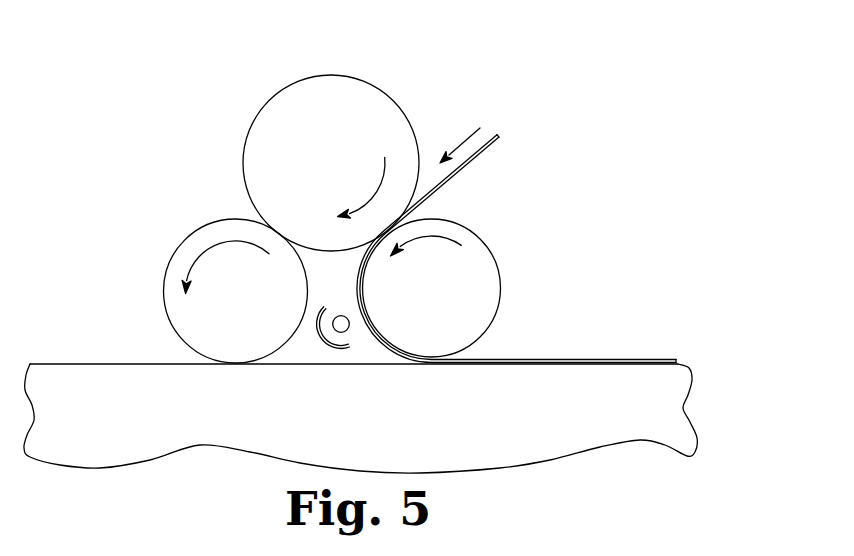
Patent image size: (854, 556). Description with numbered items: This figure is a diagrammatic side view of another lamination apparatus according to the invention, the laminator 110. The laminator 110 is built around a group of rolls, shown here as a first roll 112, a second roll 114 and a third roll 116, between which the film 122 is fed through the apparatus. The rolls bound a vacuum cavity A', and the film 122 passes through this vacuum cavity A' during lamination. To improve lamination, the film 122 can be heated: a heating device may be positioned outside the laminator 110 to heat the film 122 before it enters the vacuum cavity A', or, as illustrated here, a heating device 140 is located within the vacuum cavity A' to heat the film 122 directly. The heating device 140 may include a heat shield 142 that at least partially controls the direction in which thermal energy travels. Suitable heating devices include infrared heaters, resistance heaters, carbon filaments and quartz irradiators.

The laminator 110 is at (448, 67).
The roller 112 is at (493, 256).
The roller 114 is at (323, 75).
The roller 116 is at (167, 272).
The film 122 is at (488, 147).
The heating device 140 is at (347, 331).
The guide 142 is at (327, 348).
The vacuum cavity A' is at (271, 371).